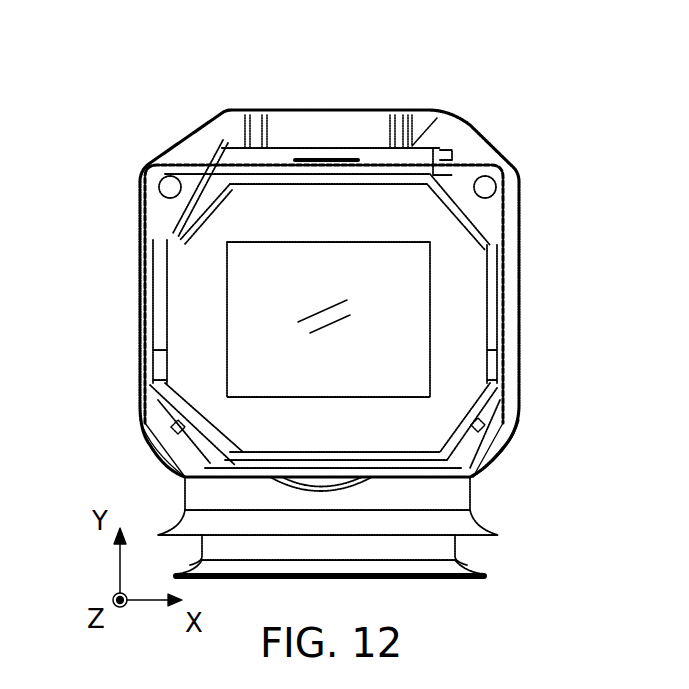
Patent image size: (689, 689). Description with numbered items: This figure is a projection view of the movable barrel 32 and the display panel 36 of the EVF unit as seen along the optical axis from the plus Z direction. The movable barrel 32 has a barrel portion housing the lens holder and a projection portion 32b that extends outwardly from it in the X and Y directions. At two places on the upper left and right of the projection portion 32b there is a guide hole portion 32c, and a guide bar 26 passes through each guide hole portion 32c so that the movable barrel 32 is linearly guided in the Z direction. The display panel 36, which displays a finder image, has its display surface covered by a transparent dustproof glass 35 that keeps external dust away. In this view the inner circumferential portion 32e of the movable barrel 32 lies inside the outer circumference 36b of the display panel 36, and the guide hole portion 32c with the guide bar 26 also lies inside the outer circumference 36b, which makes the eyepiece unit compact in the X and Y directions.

The movable barrel 32 is at (303, 128).
The projection portion 32b is at (180, 153).
The guide hole portion 32c is at (156, 190).
The guide bar 26 is at (318, 186).
The inner circumferential portion 32e is at (200, 208).
The dustproof glass 35 is at (240, 327).
The display panel 36 is at (368, 218).
The outer circumference 36b is at (468, 162).